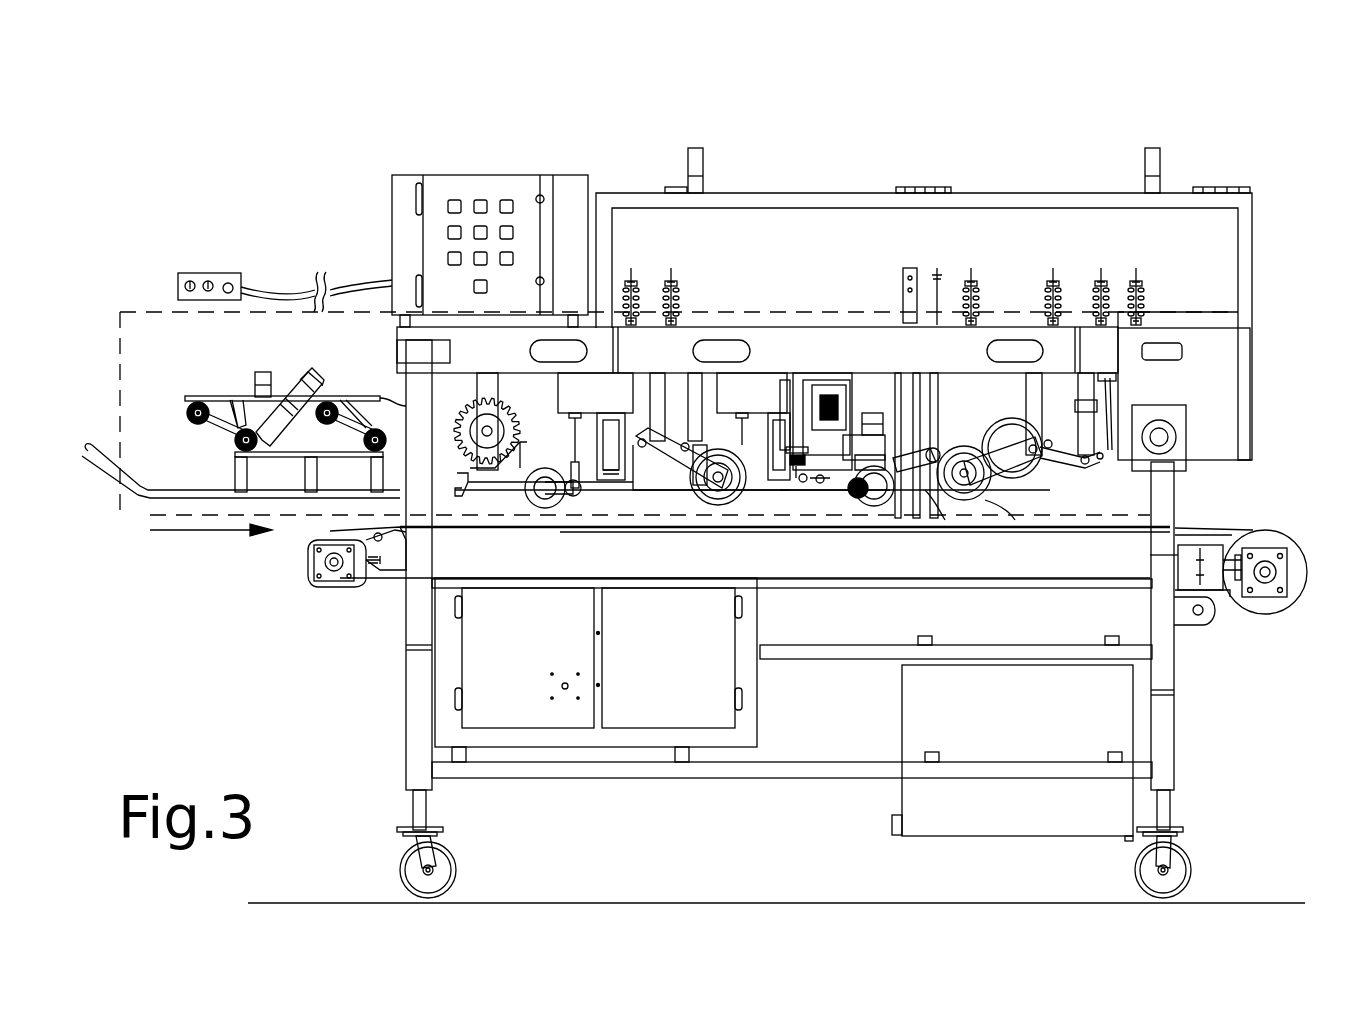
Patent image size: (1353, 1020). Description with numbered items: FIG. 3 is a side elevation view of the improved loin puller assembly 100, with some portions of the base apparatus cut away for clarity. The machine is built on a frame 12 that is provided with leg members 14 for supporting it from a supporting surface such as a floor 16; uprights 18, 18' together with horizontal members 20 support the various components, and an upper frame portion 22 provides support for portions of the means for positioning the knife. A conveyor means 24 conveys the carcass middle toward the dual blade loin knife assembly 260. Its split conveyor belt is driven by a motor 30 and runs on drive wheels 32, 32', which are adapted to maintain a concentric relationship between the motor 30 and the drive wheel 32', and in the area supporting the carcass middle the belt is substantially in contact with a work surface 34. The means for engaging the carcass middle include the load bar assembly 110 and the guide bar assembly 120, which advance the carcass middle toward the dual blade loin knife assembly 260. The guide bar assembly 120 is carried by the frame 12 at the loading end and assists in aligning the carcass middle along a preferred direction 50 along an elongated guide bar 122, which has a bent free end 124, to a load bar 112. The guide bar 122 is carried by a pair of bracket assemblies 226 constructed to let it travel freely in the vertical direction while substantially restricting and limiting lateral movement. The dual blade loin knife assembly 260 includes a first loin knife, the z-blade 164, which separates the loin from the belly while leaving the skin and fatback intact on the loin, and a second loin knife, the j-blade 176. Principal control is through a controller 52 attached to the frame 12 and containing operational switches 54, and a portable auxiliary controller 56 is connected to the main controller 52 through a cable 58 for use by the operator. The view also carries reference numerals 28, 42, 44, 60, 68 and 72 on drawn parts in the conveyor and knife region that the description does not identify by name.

The loin puller assembly 100 is at (1252, 126).
The frame 12 is at (406, 614).
The leg members 14 is at (413, 804).
The floor 16 is at (622, 903).
The upright 18 is at (380, 565).
The upright 18' is at (1210, 626).
The horizontal members 20 is at (545, 767).
The upper frame portion 22 is at (720, 193).
The conveyor means 24 is at (1068, 520).
The conveyor discharge end 28 is at (1258, 530).
The motor 30 is at (1276, 572).
The drive wheel 32 is at (338, 582).
The drive wheel 32' is at (1281, 590).
The work surface 34 is at (1068, 529).
The hold-down roller 42 is at (735, 500).
The spring 44 is at (680, 293).
The preferred direction 50 is at (228, 535).
The controller 52 is at (475, 176).
The operational switches 54 is at (504, 200).
The portable auxiliary controller 56 is at (205, 273).
The cable 58 is at (270, 290).
The cutting assembly 60 is at (872, 412).
The roller 68 is at (825, 490).
The roller 72 is at (882, 500).
The load bar assembly 110 is at (652, 500).
The load bar 112 is at (683, 495).
The guide bar assembly 120 is at (148, 312).
The guide bar 122 is at (170, 498).
The bent free end 124 is at (85, 457).
The z-blade 164 is at (926, 498).
The j-blade 176 is at (958, 500).
The bracket assemblies 226 is at (185, 410).
The dual blade loin knife assembly 260 is at (908, 425).